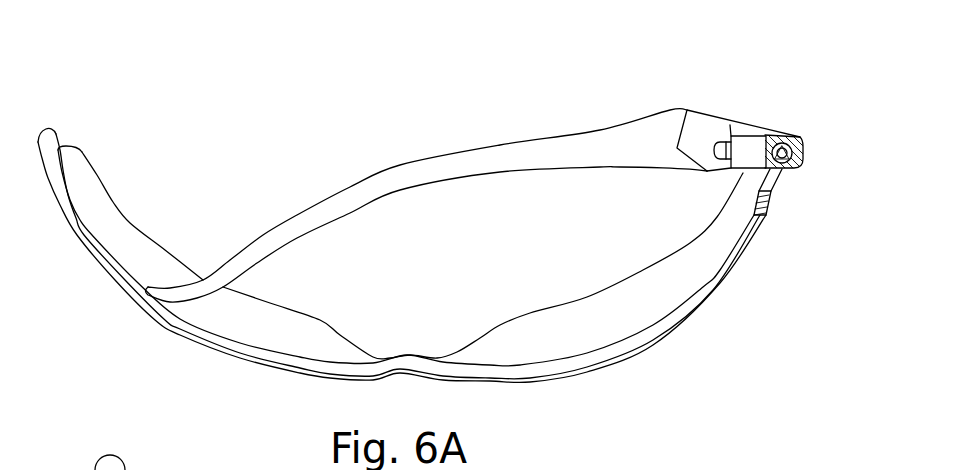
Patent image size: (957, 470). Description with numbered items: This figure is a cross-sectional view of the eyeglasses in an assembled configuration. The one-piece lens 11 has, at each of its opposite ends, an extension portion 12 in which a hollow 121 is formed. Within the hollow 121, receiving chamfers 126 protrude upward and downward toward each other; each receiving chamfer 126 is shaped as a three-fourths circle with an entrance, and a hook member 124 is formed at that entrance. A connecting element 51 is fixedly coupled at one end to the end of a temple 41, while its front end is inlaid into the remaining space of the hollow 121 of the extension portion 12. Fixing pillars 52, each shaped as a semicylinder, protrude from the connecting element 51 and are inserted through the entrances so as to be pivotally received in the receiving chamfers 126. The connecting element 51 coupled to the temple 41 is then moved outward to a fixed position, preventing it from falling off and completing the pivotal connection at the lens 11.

The lens 11 is at (624, 343).
The extension portion 12 is at (50, 140).
The temple 41 is at (578, 148).
The connecting element 51 is at (752, 152).
The fixing pillar 52 is at (790, 146).
The hook member 124 is at (782, 147).
The receiving chamfer 126 is at (789, 174).
The hollow 121 is at (763, 216).